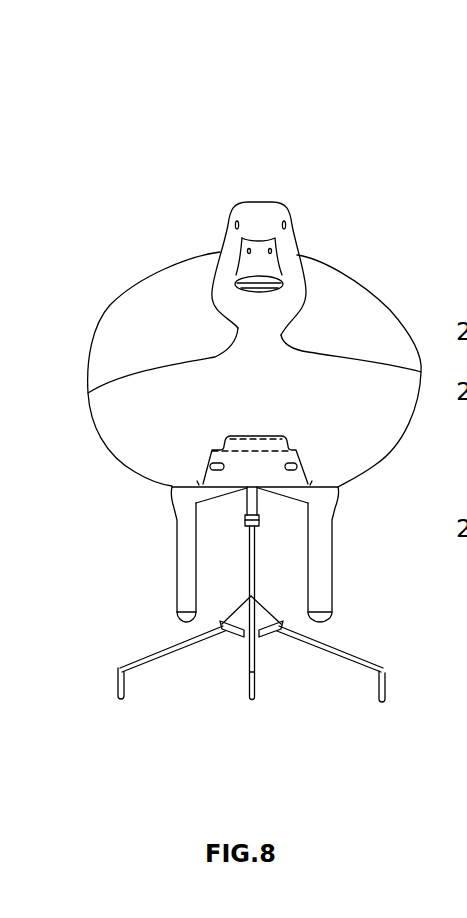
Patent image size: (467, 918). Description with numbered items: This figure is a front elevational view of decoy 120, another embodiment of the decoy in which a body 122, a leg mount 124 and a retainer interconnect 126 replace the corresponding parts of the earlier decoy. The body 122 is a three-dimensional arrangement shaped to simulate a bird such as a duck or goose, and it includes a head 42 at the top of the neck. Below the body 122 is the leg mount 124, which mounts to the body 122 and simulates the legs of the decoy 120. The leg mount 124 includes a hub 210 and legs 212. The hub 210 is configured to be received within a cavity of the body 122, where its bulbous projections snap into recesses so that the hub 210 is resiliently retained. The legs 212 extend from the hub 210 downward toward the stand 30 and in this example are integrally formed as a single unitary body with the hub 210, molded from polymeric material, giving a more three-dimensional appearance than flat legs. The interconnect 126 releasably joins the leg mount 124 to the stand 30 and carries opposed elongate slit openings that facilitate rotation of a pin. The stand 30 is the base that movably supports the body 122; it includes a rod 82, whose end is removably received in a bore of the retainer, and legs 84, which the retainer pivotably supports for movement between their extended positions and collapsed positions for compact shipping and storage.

The decoy 120 is at (166, 142).
The body 122 is at (350, 265).
The head 42 is at (276, 202).
The hub 210 is at (290, 459).
The leg mount 124 is at (342, 518).
The legs 212 is at (178, 596).
The rod 82 is at (256, 550).
The retainer interconnect 126 is at (258, 507).
The stand 30 is at (346, 645).
The legs 84 is at (253, 530).